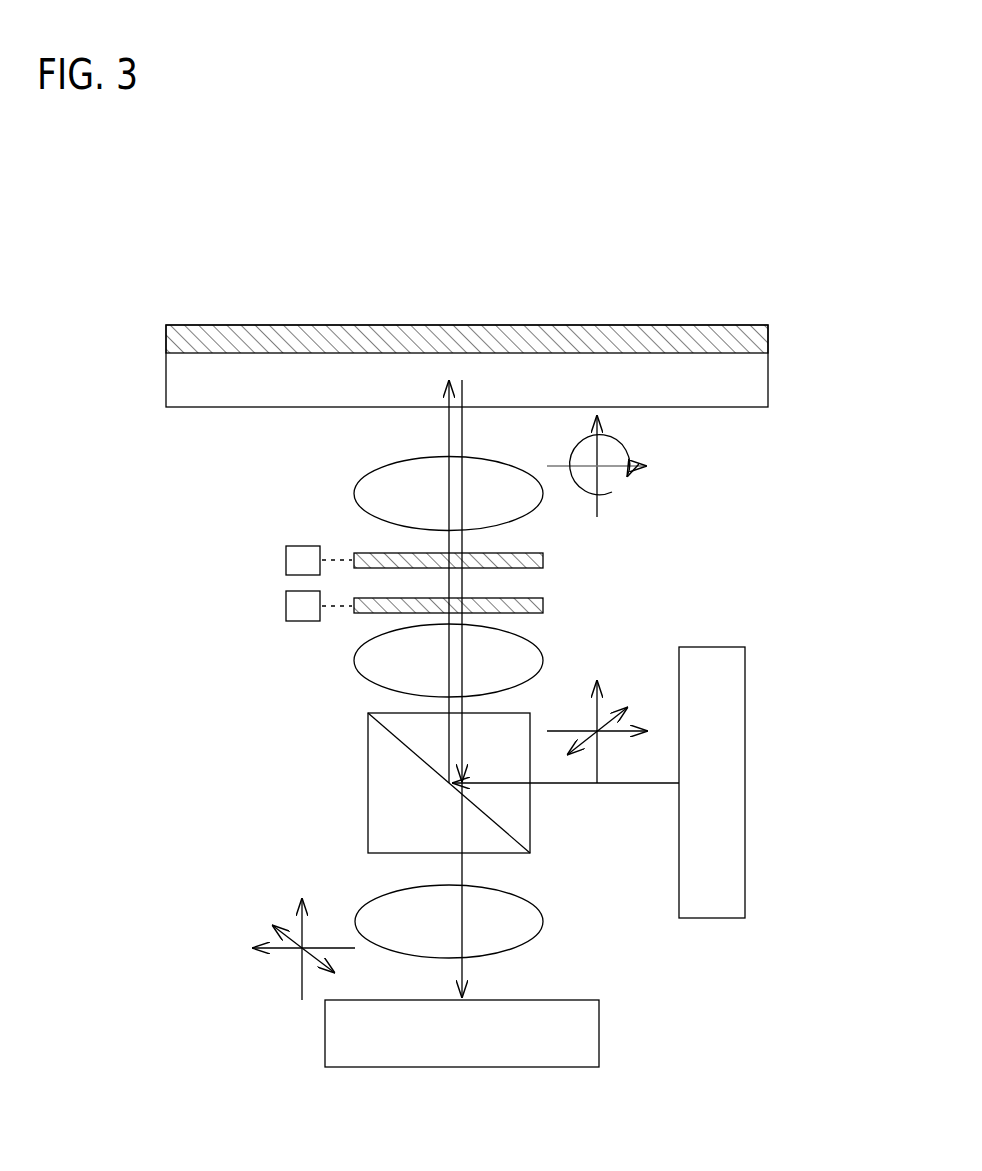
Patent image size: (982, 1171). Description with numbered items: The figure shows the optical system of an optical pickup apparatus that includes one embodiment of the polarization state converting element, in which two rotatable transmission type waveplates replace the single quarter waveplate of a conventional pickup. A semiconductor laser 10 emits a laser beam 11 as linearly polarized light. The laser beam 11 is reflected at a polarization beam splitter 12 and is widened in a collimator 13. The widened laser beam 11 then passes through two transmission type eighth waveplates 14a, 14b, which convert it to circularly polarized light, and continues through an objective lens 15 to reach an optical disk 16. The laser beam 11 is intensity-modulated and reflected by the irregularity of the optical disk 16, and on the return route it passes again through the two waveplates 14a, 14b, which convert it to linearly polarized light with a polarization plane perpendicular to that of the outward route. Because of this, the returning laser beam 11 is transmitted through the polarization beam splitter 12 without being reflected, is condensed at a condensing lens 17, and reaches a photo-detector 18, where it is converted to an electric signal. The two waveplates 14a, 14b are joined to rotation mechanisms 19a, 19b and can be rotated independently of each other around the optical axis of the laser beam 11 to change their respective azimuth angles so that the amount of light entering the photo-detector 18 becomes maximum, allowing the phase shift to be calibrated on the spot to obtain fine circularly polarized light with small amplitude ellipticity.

The semiconductor laser 10 is at (710, 665).
The laser beam 11 is at (633, 787).
The polarization beam splitter 12 is at (523, 720).
The collimator 13 is at (533, 663).
The transmission type 1/8 waveplate 14a is at (527, 608).
The transmission type 1/8 waveplate 14b is at (528, 562).
The objective lens 15 is at (487, 480).
The optical disk 16 is at (757, 381).
The condensing lens 17 is at (523, 917).
The photo-detector 18 is at (587, 1019).
The rotation mechanism 19a is at (295, 607).
The rotation mechanism 19b is at (295, 562).